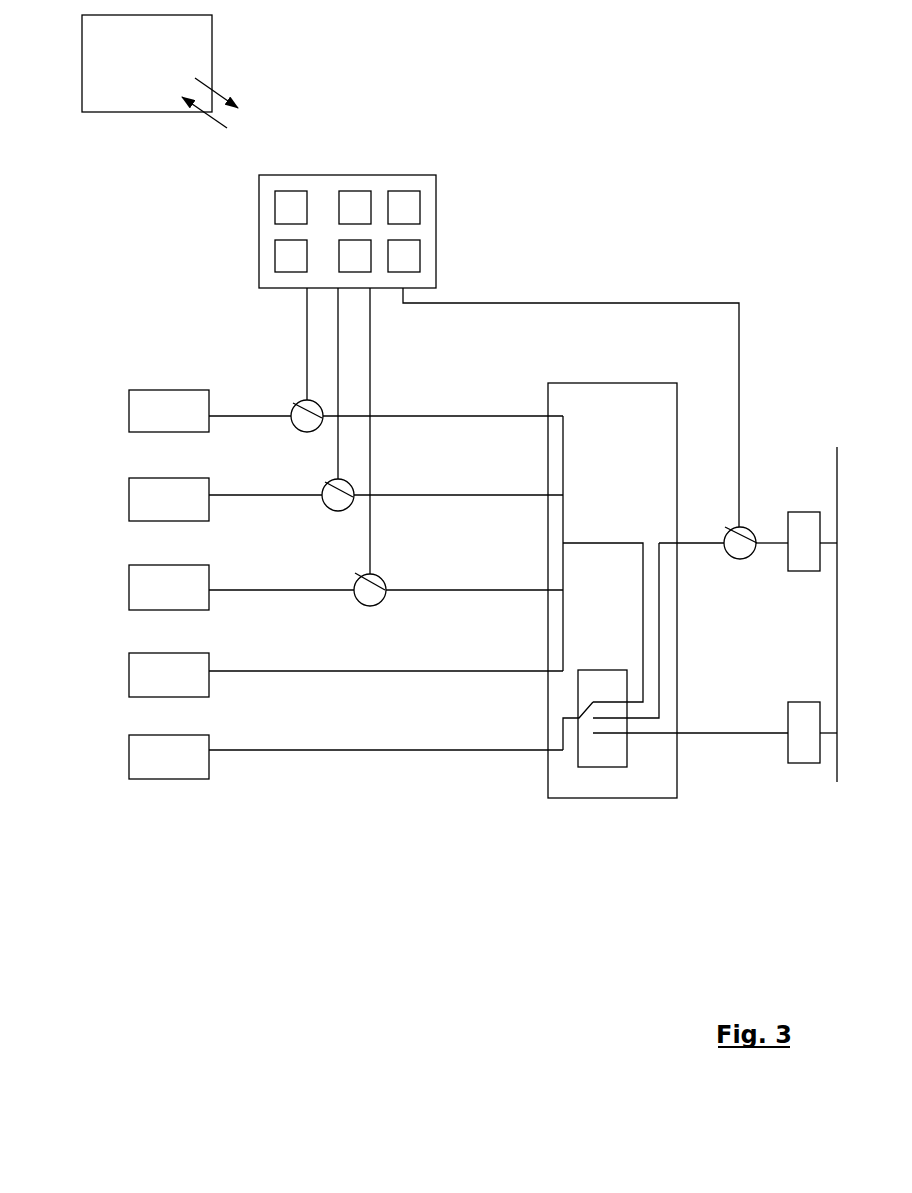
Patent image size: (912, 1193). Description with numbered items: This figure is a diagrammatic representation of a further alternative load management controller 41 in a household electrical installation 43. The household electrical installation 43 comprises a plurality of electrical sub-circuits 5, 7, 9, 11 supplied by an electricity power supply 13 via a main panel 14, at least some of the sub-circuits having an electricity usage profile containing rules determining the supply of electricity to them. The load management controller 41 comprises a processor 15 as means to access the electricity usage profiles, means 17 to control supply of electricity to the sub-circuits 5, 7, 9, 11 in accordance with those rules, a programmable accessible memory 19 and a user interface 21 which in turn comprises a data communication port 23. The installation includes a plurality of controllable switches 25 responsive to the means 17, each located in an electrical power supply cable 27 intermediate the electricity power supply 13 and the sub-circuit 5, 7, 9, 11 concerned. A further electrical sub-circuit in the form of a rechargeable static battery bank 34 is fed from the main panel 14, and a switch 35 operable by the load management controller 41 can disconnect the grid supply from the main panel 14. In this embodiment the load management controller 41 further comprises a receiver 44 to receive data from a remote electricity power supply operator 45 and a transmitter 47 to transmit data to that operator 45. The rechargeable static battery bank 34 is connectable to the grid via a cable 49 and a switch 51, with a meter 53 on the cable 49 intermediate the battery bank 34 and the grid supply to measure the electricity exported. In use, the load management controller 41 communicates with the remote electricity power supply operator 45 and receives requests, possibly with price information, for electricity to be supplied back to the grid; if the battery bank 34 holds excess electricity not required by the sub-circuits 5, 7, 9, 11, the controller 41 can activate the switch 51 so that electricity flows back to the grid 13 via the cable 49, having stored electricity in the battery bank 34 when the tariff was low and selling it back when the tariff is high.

The remote electricity power supply operator 45 is at (128, 63).
The load management controller 41 is at (453, 175).
The household electrical installation 43 is at (712, 222).
The receiver 44 is at (339, 255).
The transmitter 47 is at (355, 207).
The processor 15 is at (275, 208).
The means to control supply of electricity 17 is at (275, 257).
The programmable accessible memory 19 is at (420, 204).
The data communication port 23 is at (403, 253).
The user interface 21 is at (420, 255).
The electrical sub-circuit 11 is at (143, 411).
The electrical sub-circuit 9 is at (143, 493).
The electrical sub-circuit 7 is at (143, 588).
The electrical sub-circuit 5 is at (143, 671).
The rechargeable static battery bank 34 is at (143, 750).
The controllable switch 25 is at (297, 401).
The electrical power supply cable 27 is at (498, 416).
The main panel 14 is at (658, 750).
The switch 51 is at (612, 767).
The cable 49 is at (740, 733).
The meter 53 is at (803, 750).
The switch 35 is at (757, 543).
The electricity power supply 13 is at (837, 620).